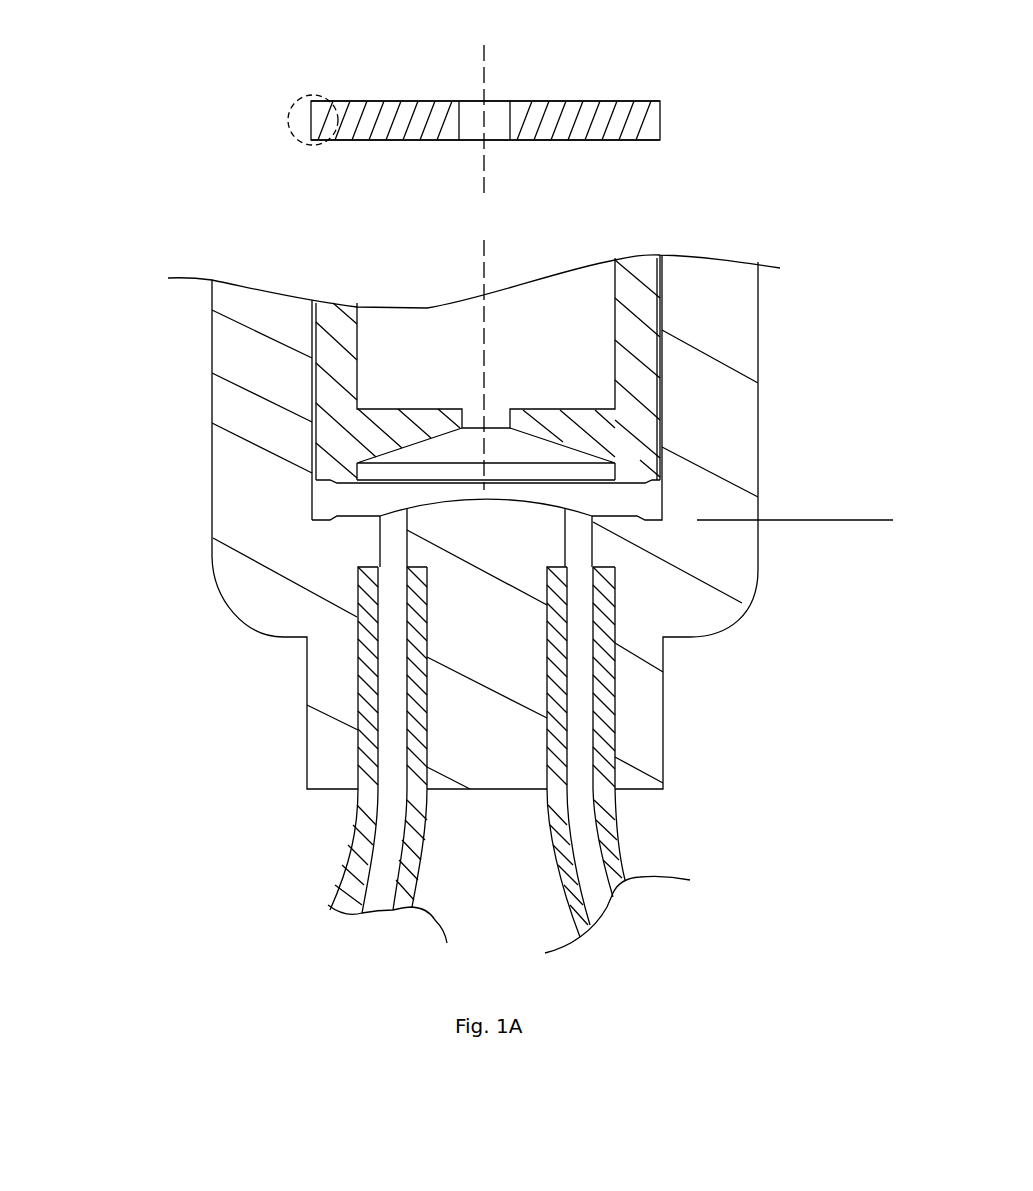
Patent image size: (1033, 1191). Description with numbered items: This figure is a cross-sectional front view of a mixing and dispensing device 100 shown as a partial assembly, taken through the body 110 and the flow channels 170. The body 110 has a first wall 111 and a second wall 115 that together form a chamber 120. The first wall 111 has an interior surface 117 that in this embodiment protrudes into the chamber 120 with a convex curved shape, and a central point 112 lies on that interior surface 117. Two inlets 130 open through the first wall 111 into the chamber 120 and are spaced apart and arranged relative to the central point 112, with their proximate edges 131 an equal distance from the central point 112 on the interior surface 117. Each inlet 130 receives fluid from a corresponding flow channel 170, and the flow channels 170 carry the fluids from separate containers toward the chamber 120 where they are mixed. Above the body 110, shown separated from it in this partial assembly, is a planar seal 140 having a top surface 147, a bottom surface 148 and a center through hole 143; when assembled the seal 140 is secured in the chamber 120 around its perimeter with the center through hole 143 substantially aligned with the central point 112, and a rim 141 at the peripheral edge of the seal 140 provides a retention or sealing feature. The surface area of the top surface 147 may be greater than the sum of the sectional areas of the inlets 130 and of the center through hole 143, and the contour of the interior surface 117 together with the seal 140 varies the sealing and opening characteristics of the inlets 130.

The device 100 is at (146, 141).
The body 110 is at (167, 457).
The first wall 111 is at (340, 527).
The central point 112 is at (488, 498).
The second wall 115 is at (285, 503).
The interior surface 117 is at (866, 514).
The chamber 120 is at (427, 453).
The inlets 130 is at (388, 548).
The edge 131 is at (405, 513).
The seal 140 is at (722, 119).
The rim 141 is at (298, 130).
The center through hole 143 is at (500, 118).
The top surface 147 is at (610, 100).
The bottom surface 148 is at (623, 140).
The flow channels 170 is at (393, 832).